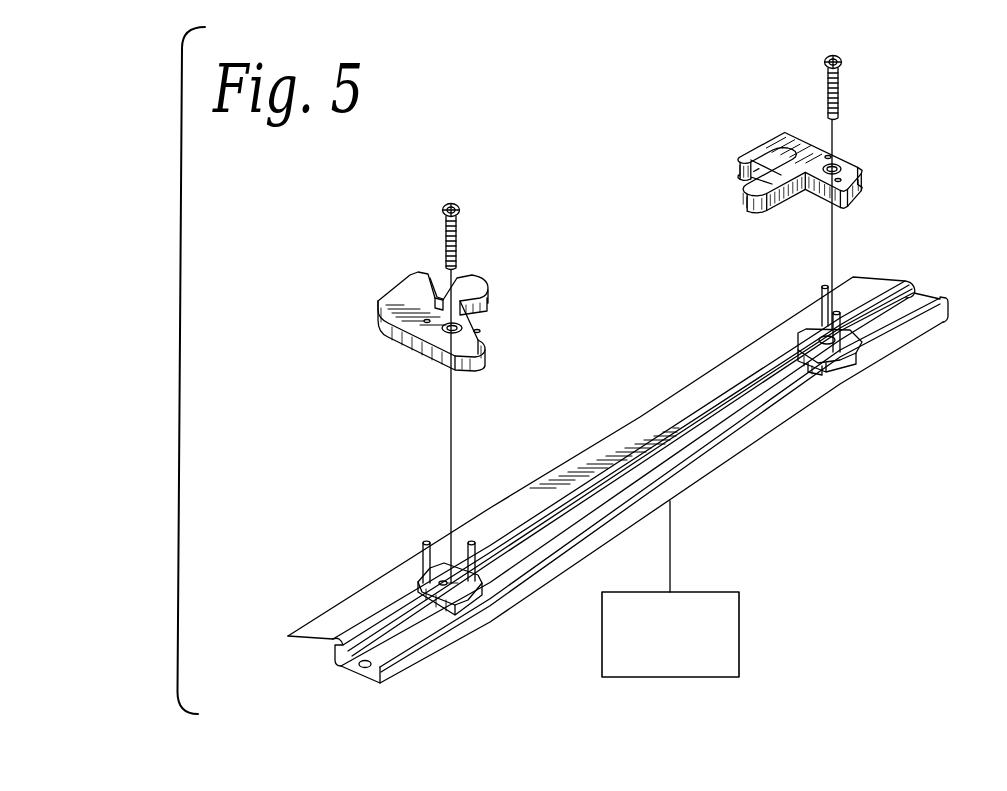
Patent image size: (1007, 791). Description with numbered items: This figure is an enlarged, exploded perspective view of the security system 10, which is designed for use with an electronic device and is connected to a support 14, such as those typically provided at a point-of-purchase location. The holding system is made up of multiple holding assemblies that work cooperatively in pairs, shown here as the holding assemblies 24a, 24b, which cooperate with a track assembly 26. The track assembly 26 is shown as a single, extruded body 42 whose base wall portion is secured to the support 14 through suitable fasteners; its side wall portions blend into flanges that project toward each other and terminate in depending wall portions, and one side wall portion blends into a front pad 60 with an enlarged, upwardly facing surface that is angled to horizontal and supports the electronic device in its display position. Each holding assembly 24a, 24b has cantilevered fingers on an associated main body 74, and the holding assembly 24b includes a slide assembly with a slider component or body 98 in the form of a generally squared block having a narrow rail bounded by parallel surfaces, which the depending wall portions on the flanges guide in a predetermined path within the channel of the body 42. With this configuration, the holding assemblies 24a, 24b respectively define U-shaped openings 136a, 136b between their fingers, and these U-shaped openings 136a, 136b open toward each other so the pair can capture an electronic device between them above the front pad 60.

The security system 10 is at (903, 223).
The support 14 is at (654, 661).
The holding assembly 24a is at (895, 168).
The holding assembly 24b is at (358, 335).
The track assembly 26 is at (788, 428).
The extruded body 42 is at (870, 360).
The front pad 60 is at (627, 427).
The main body 74 is at (407, 296).
The slider component/body 98 is at (462, 593).
The U-shaped opening 136a is at (746, 183).
The U-shaped opening 136b is at (436, 294).